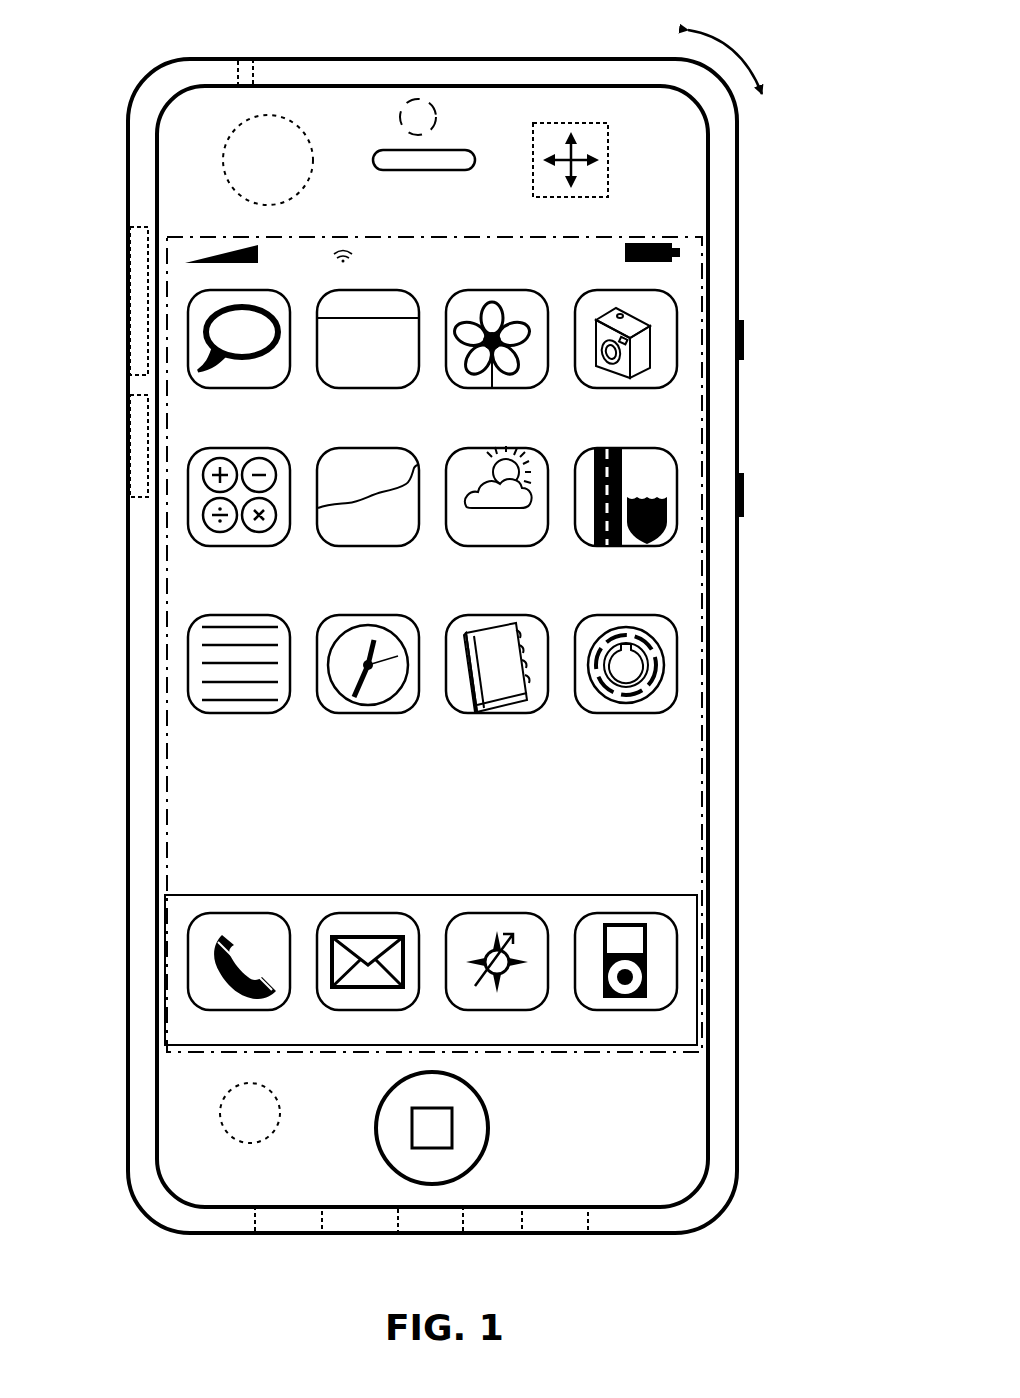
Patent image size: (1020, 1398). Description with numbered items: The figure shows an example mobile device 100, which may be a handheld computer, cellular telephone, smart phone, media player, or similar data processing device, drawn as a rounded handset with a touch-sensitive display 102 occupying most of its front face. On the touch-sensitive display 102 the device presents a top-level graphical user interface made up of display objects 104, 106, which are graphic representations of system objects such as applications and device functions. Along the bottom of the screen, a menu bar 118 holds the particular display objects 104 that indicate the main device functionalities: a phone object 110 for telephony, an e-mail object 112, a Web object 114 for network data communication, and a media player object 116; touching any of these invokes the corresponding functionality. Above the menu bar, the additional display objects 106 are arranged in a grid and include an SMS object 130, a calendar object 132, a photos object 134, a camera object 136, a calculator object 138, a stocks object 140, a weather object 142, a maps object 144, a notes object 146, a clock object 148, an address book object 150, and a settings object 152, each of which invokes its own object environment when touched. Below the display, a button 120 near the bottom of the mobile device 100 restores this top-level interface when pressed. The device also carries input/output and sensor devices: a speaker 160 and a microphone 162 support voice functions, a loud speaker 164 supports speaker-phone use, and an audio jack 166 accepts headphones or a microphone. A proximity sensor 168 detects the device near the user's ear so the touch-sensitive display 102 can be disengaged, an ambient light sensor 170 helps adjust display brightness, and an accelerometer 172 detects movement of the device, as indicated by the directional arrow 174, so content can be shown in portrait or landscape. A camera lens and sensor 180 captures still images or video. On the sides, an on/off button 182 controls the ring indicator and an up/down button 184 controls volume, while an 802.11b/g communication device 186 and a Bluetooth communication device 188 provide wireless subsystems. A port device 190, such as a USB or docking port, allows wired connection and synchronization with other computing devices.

The mobile device 100 is at (518, 58).
The touch-sensitive display 102 is at (637, 237).
The display objects 104 is at (690, 912).
The display objects 106 is at (690, 284).
The phone object 110 is at (240, 913).
The e-mail object 112 is at (369, 913).
The Web object 114 is at (498, 913).
The media player object 116 is at (627, 913).
The menu bar 118 is at (578, 1046).
The button 120 is at (488, 1126).
The SMS object 130 is at (285, 385).
The calendar object 132 is at (414, 385).
The photos object 134 is at (543, 385).
The camera object 136 is at (672, 380).
The calculator object 138 is at (285, 543).
The stocks object 140 is at (414, 543).
The weather object 142 is at (543, 543).
The maps object 144 is at (672, 538).
The notes object 146 is at (285, 710).
The clock object 148 is at (414, 710).
The address book object 150 is at (541, 710).
The settings object 152 is at (672, 705).
The speaker 160 is at (395, 171).
The microphone 162 is at (324, 1218).
The loud speaker 164 is at (590, 1218).
The audio jack 166 is at (254, 68).
The proximity sensor 168 is at (226, 167).
The ambient light sensor 170 is at (268, 1137).
The accelerometer 172 is at (609, 165).
The directional arrow 174 is at (747, 62).
The camera lens and sensor 180 is at (438, 116).
The on/off button 182 is at (745, 340).
The up/down button 184 is at (745, 492).
The 802.11b/g communication device 186 is at (138, 226).
The Bluetooth communication device 188 is at (136, 394).
The port device 190 is at (464, 1218).